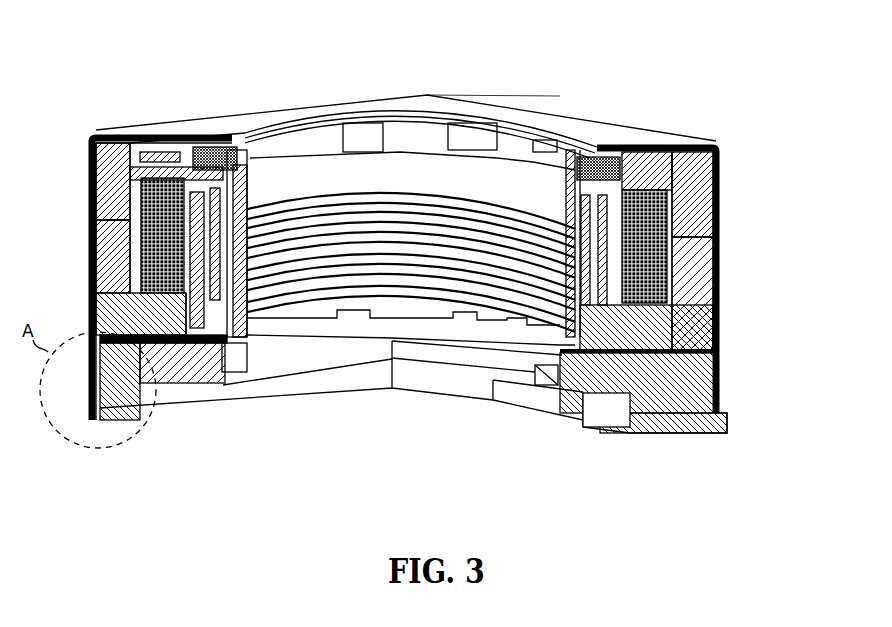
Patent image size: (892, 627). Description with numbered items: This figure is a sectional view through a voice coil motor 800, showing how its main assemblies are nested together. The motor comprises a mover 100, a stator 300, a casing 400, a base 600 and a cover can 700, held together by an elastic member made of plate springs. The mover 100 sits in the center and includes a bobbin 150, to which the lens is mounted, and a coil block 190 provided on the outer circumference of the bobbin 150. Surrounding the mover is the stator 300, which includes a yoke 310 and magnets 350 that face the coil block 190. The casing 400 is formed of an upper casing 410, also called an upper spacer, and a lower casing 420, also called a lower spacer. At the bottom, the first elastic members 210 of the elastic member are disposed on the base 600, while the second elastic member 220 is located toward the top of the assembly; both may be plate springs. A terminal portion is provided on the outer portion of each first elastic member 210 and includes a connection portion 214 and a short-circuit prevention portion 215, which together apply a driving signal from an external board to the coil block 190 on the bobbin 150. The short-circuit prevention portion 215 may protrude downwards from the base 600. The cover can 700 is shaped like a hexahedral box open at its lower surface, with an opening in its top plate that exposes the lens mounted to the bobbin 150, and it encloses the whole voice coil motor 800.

The mover 100 is at (365, 300).
The bobbin 150 is at (323, 302).
The coil block 190 is at (208, 310).
The first elastic member 210 is at (200, 348).
The connection portion 214 is at (115, 340).
The short-circuit prevention portion 215 is at (105, 397).
The second elastic member 220 is at (222, 148).
The stator 300 is at (459, 271).
The yoke 310 is at (710, 152).
The magnet 350 is at (663, 200).
The casing 400 is at (504, 264).
The upper casing 410 is at (692, 214).
The lower casing 420 is at (810, 207).
The base 600 is at (665, 438).
The cover can 700 is at (427, 95).
The voice coil motor 800 is at (560, 95).